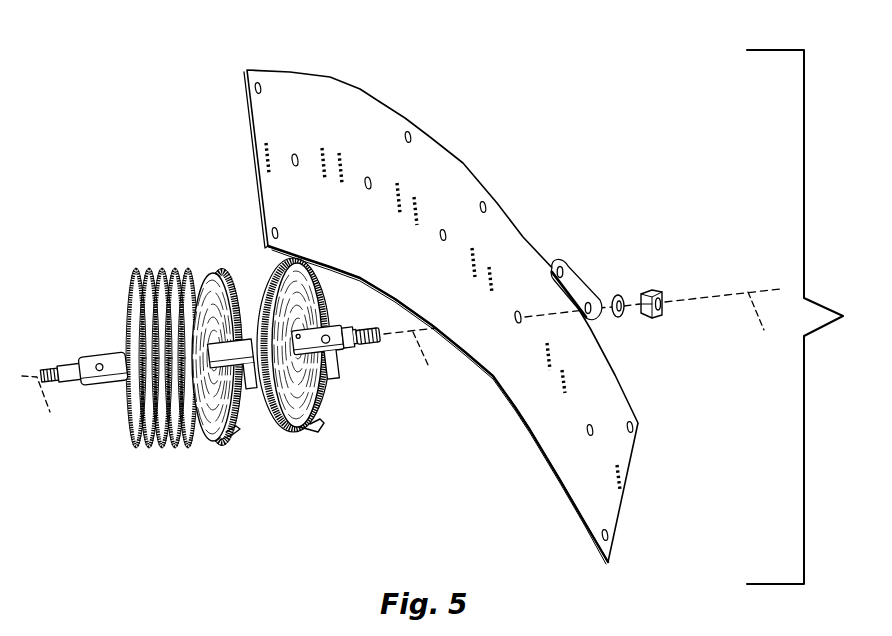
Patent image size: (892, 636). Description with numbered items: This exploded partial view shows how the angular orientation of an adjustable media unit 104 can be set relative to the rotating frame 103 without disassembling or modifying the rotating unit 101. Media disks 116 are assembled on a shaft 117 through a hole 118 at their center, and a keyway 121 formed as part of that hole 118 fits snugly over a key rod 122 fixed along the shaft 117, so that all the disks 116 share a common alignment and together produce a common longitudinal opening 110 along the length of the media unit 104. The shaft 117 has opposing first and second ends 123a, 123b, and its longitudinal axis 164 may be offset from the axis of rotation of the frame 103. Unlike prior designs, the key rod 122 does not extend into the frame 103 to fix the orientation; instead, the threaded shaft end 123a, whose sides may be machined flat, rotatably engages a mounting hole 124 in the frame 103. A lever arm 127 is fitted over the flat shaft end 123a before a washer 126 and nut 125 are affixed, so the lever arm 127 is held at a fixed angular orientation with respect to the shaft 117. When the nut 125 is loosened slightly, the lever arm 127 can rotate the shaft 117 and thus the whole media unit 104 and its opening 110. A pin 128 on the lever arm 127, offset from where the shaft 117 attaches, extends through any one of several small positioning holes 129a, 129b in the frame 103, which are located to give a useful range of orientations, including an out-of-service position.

The rotating unit 101 is at (440, 89).
The rotating frame 103 is at (465, 163).
The adjustable media unit 104 is at (177, 447).
The opening 110 is at (252, 420).
The media disk 116 is at (307, 432).
The shaft 117 is at (107, 357).
The hole 118 is at (223, 440).
The keyway 121 is at (226, 447).
The key rod 122 is at (340, 357).
The shaft end 123a is at (366, 343).
The shaft end 123b is at (70, 378).
The mounting hole 124 is at (517, 323).
The nut 125 is at (660, 318).
The washer 126 is at (620, 318).
The lever arm 127 is at (590, 287).
The pin 128 is at (561, 273).
The positioning hole 129a is at (490, 268).
The positioning hole 129b is at (552, 355).
The longitudinal axis 164 is at (400, 365).